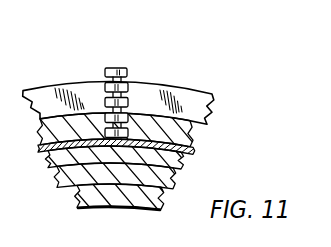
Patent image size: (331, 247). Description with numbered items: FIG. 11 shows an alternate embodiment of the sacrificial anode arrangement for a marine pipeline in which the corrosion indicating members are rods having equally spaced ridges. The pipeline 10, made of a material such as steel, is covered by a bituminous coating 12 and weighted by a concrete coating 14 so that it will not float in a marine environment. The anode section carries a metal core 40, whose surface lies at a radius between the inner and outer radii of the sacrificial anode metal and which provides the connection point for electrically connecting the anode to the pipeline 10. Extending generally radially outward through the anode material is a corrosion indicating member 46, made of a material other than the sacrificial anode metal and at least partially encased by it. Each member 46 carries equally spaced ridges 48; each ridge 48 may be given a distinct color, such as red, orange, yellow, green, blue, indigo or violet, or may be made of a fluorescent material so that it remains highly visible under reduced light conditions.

The pipeline 10 is at (88, 212).
The bituminous coating 12 is at (57, 189).
The concrete coating 14 is at (50, 90).
The metal core 40 is at (187, 160).
The corrosion indicating member 46 is at (115, 68).
The ridge 48 is at (128, 103).